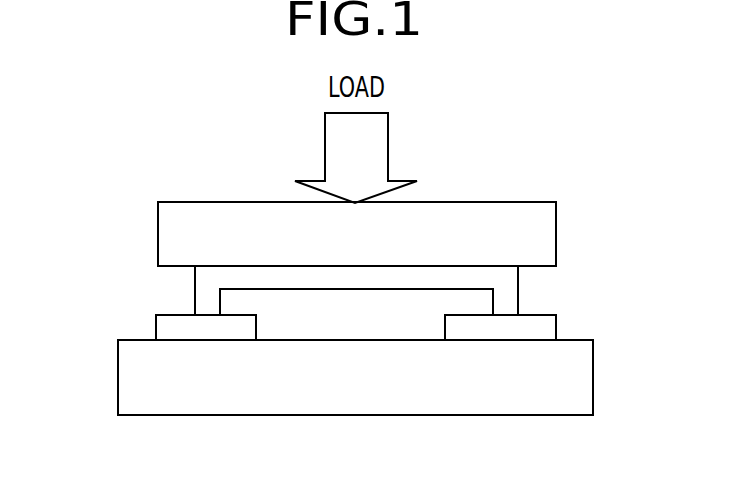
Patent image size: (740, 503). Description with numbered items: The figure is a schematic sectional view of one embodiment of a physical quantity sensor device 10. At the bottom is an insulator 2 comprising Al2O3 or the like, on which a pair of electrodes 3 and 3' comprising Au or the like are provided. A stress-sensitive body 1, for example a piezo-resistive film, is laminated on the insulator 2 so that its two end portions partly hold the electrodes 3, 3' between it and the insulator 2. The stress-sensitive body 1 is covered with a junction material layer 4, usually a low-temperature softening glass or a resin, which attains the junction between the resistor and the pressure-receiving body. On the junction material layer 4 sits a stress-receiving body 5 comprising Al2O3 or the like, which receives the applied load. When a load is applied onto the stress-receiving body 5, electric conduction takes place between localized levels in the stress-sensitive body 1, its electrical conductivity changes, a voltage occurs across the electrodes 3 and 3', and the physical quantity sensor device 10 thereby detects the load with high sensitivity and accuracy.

The physical quantity sensor device 10 is at (613, 176).
The stress-receiving body 5 is at (225, 218).
The junction material layer 4 is at (496, 279).
The stress-sensitive body 1 is at (298, 307).
The electrode 3 is at (135, 318).
The electrode 3' is at (566, 325).
The insulator 2 is at (573, 388).